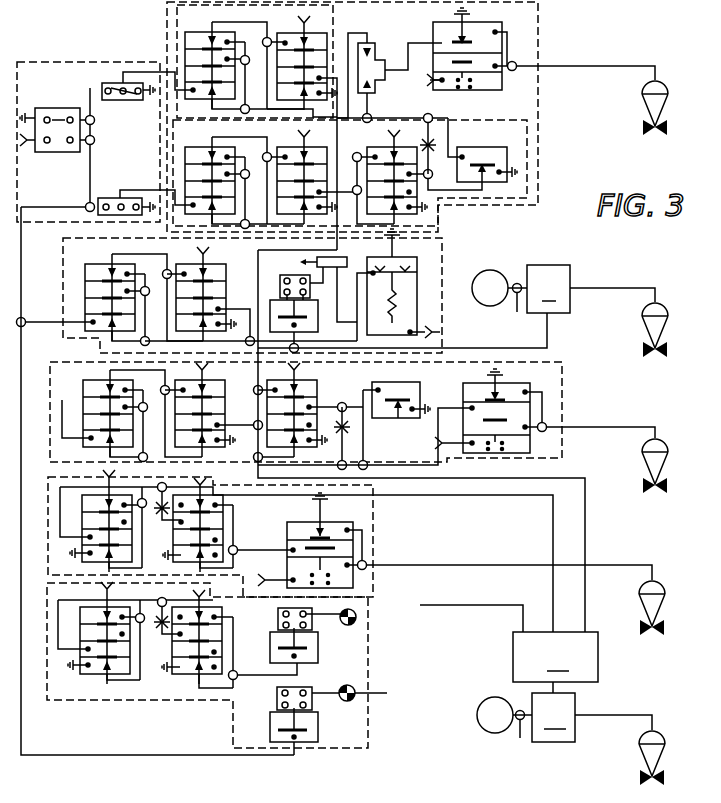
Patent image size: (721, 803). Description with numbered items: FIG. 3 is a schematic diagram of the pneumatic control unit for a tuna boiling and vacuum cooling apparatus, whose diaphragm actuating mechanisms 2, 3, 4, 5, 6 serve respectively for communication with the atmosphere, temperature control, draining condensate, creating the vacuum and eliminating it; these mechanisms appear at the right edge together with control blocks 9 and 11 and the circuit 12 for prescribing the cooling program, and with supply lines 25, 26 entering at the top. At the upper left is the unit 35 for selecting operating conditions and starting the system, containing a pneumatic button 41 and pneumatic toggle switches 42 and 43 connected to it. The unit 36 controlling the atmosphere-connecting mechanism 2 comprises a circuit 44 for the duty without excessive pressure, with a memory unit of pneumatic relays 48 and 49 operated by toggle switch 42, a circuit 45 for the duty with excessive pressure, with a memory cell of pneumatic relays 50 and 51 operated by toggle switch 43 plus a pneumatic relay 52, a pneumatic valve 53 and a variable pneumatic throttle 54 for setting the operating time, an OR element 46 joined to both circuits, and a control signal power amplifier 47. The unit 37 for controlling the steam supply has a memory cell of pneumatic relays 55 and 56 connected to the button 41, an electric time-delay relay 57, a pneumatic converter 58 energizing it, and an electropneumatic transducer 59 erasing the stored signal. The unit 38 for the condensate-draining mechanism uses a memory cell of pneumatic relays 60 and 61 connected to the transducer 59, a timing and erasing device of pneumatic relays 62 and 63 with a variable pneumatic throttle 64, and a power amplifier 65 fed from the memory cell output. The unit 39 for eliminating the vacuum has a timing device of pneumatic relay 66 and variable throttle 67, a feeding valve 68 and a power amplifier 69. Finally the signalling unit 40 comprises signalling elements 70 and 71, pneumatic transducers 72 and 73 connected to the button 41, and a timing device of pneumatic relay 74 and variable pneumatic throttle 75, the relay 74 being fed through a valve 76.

The diaphragm actuating mechanism 2 is at (668, 100).
The diaphragm actuating mechanism 3 is at (668, 322).
The diaphragm actuating mechanism 4 is at (668, 460).
The diaphragm actuating mechanism 5 is at (665, 753).
The diaphragm actuating mechanism 6 is at (666, 603).
The control unit 9 is at (456, 306).
The control unit 11 is at (564, 717).
The circuit for prescribing the cooling program 12 is at (555, 662).
The supply line 25 is at (37, 9).
The supply line 26 is at (86, 1).
The unit for selection of the operating conditions and for starting the system 35 is at (94, 63).
The unit for controlling the diaphragm-actuating mechanism connecting the apparatus 36 is at (540, 37).
The unit for controlling the steam supply 37 is at (442, 244).
The unit for controlling the condensate-draining diaphragm-actuating mechanism 38 is at (562, 384).
The unit for controlling the vacuum-eliminating diaphragm-actuating mechanism 39 is at (377, 510).
The signalling unit 40 is at (373, 608).
The pneumatic button 41 is at (76, 108).
The pneumatic toggle switch 42 is at (123, 101).
The pneumatic toggle switch 43 is at (107, 198).
The circuit for controlling the apparatus in the duty without an excessive pressure 44 is at (333, 13).
The circuit for controlling the apparatus in the duty with an excessive pressure 45 is at (525, 114).
The OR element 46 is at (385, 62).
The control signal power amplifier 47 is at (502, 24).
The pneumatic relay 48 is at (236, 29).
The pneumatic relay 49 is at (295, 33).
The pneumatic relay 50 is at (240, 149).
The pneumatic relay 51 is at (295, 148).
The pneumatic relay 52 is at (412, 142).
The pneumatic valve 53 is at (500, 142).
The variable pneumatic throttle 54 is at (431, 148).
The pneumatic relay 55 is at (110, 294).
The pneumatic relay 56 is at (232, 275).
The electric time-delay relay 57 is at (322, 285).
The pneumatic converter 58 is at (291, 307).
The electropneumatic transducer 59 is at (417, 313).
The pneumatic relay 60 is at (90, 392).
The pneumatic relay 61 is at (233, 380).
The pneumatic relay 62 is at (322, 387).
The pneumatic relay 63 is at (420, 384).
The variable pneumatic throttle 64 is at (350, 429).
The control signal power amplifier 65 is at (532, 379).
The pneumatic relay 66 is at (233, 523).
The variable throttle 67 is at (190, 525).
The valve 68 is at (80, 524).
The power amplifier 69 is at (302, 521).
The signalling element 70 is at (364, 697).
The signalling element 71 is at (357, 621).
The pneumatic transducer 72 is at (313, 707).
The pneumatic transducer 73 is at (312, 635).
The pneumatic relay 74 is at (233, 633).
The variable pneumatic throttle 75 is at (190, 639).
The valve 76 is at (78, 636).